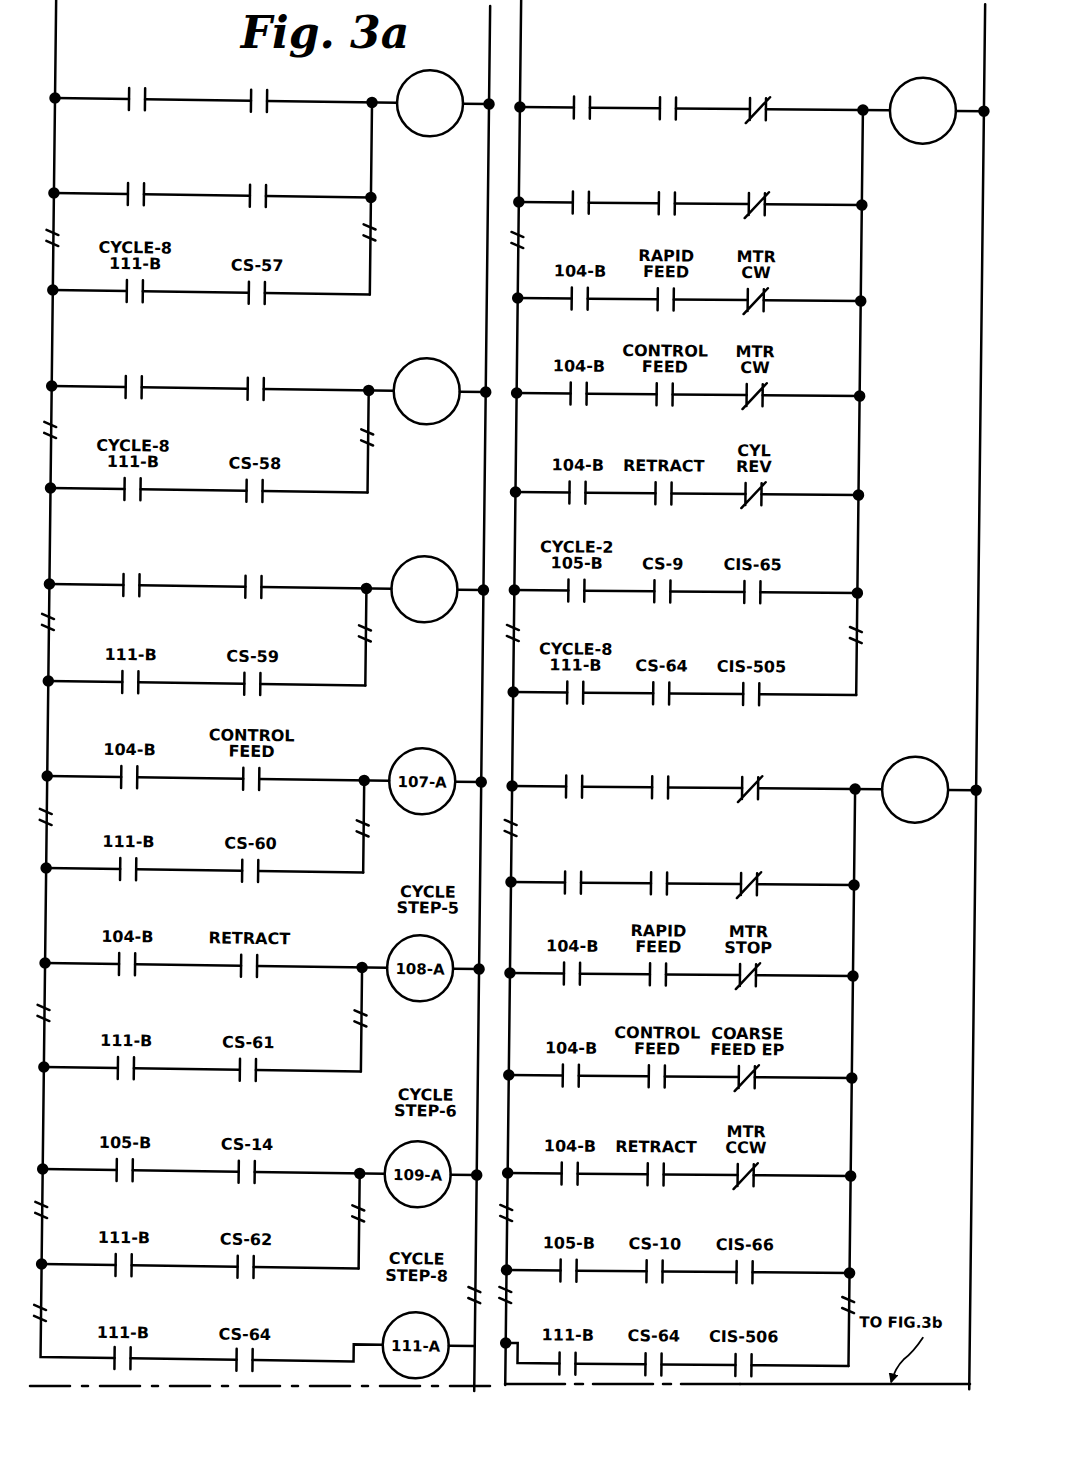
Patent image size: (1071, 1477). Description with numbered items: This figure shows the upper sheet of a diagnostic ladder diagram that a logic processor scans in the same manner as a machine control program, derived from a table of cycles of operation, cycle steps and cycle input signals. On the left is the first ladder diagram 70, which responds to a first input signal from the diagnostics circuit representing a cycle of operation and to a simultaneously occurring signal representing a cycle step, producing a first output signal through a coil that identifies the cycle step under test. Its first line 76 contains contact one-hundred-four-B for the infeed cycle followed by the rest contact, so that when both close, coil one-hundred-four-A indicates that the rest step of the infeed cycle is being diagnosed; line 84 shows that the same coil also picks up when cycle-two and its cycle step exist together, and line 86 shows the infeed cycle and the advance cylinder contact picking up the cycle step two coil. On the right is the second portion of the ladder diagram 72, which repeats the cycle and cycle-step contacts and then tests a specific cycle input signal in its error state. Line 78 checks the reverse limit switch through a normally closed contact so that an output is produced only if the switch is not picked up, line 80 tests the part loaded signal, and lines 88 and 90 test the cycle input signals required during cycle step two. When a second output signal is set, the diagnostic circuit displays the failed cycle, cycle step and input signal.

The first ladder diagram 70 is at (449, 619).
The second portion of the ladder diagram 72 is at (745, 685).
The first line 76 is at (343, 98).
The line 78 is at (826, 107).
The line 80 is at (834, 786).
The line 84 is at (330, 193).
The line 86 is at (325, 386).
The line 88 is at (826, 202).
The line 90 is at (820, 882).